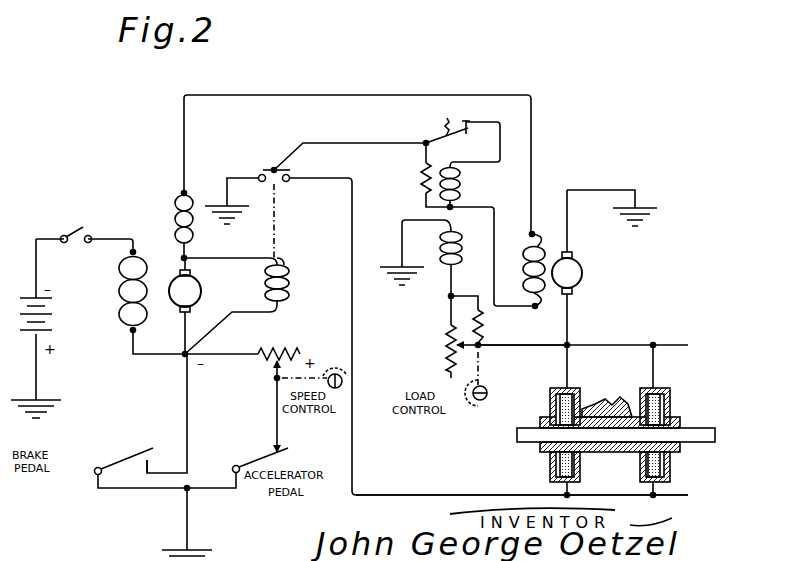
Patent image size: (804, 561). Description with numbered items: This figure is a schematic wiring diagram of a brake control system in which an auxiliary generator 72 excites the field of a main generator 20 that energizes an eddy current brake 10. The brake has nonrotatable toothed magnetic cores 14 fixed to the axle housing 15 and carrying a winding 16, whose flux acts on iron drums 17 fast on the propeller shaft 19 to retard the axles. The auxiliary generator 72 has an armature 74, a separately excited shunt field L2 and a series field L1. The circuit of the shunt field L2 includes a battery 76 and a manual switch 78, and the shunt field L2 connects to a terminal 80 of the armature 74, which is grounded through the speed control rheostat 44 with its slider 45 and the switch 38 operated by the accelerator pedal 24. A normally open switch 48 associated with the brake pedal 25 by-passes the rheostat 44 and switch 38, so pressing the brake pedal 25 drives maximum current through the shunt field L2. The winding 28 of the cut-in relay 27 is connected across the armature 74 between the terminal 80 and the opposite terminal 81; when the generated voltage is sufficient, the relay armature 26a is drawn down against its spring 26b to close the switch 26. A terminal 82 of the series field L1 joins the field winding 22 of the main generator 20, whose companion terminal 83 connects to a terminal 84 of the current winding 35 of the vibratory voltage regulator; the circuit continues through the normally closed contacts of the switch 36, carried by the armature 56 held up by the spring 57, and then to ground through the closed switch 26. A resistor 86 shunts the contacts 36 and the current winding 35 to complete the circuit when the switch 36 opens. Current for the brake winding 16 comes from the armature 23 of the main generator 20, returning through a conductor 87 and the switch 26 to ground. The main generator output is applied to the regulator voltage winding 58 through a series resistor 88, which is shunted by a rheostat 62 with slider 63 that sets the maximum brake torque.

The auxiliary brake 10 is at (532, 452).
The toothed magnetic cores 14 is at (647, 400).
The axle housing 15 is at (602, 403).
The winding 16 is at (667, 402).
The drums 17 is at (554, 391).
The propeller shaft 19 is at (528, 428).
The main generator 20 is at (595, 268).
The field winding 22 is at (527, 253).
The generator armature 23 is at (578, 262).
The accelerator pedal 24 is at (262, 460).
The brake pedal 25 is at (140, 458).
The switch 26 is at (290, 184).
The armature 26a is at (278, 224).
The spring 26b is at (272, 165).
The cut-in relay 27 is at (292, 263).
The winding 28 is at (289, 284).
The current winding 35 is at (461, 183).
The switch 36 is at (468, 127).
The accelerator pedal switch 38 is at (289, 450).
The speed control rheostat 44 is at (285, 350).
The slider 45 is at (274, 378).
The normally open switch 48 is at (152, 458).
The armature 56 is at (436, 134).
The spring 57 is at (446, 128).
The voltage winding 58 is at (440, 249).
The rheostat 62 is at (446, 350).
The slider 63 is at (476, 360).
The auxiliary generator 72 is at (140, 256).
The armature 74 is at (201, 291).
The battery 76 is at (50, 311).
The switch 78 is at (75, 232).
The terminal 80 is at (183, 360).
The armature terminal 81 is at (187, 257).
The terminal 82 is at (186, 191).
The terminal 83 is at (522, 333).
The terminal 84 is at (453, 205).
The resistor 86 is at (420, 184).
The conductor 87 is at (393, 498).
The series resistor 88 is at (483, 329).
The series field L1 is at (174, 200).
The separately excited field L2 is at (118, 313).